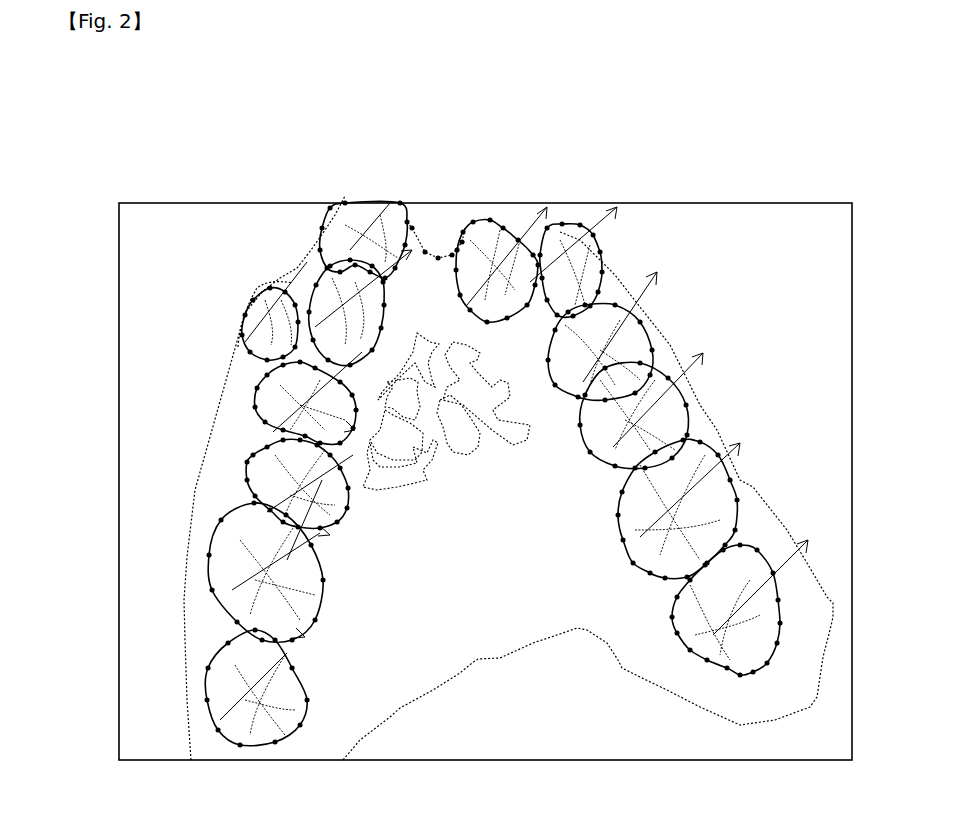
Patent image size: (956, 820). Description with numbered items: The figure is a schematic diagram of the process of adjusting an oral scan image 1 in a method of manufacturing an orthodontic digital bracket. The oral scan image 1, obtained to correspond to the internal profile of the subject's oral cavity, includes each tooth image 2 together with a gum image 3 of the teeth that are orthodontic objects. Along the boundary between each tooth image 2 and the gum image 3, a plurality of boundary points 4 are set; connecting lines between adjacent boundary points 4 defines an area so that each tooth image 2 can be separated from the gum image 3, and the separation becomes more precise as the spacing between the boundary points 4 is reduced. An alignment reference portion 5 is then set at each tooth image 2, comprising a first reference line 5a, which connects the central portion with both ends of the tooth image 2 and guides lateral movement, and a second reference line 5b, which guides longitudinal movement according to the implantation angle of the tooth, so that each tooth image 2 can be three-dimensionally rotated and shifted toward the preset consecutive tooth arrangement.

The oral scan image 1 is at (150, 121).
The tooth image 2 is at (260, 310).
The gum image 3 is at (237, 420).
The boundary points 4 is at (250, 358).
The alignment reference portion 5 is at (347, 125).
The first reference line 5a is at (300, 290).
The second reference line 5b is at (336, 262).